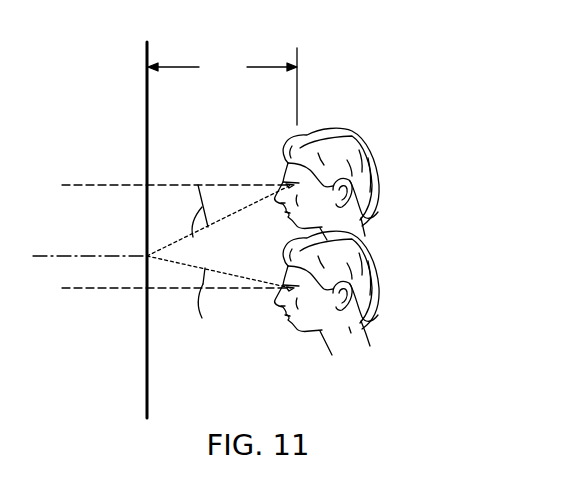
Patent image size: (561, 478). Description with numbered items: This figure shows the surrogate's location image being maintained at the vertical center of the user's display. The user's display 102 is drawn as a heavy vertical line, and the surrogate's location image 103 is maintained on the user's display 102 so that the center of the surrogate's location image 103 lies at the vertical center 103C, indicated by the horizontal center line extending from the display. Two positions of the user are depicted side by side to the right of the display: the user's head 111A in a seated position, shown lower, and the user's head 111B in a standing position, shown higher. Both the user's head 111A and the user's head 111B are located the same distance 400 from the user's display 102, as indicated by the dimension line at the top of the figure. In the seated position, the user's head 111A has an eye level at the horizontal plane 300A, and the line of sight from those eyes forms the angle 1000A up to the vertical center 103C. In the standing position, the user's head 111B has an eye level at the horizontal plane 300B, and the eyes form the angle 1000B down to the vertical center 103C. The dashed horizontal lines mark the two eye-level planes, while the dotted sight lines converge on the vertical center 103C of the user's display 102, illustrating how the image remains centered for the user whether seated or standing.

The user's display 102 is at (145, 92).
The surrogate's location image 103 is at (165, 105).
The vertical center 103C is at (32, 259).
The horizontal plane 300A is at (86, 291).
The horizontal plane 300B is at (86, 188).
The distance 400 is at (222, 86).
The angle 1000A is at (219, 300).
The angle 1000B is at (219, 223).
The user's head 111A is at (366, 233).
The user's head 111B is at (358, 137).